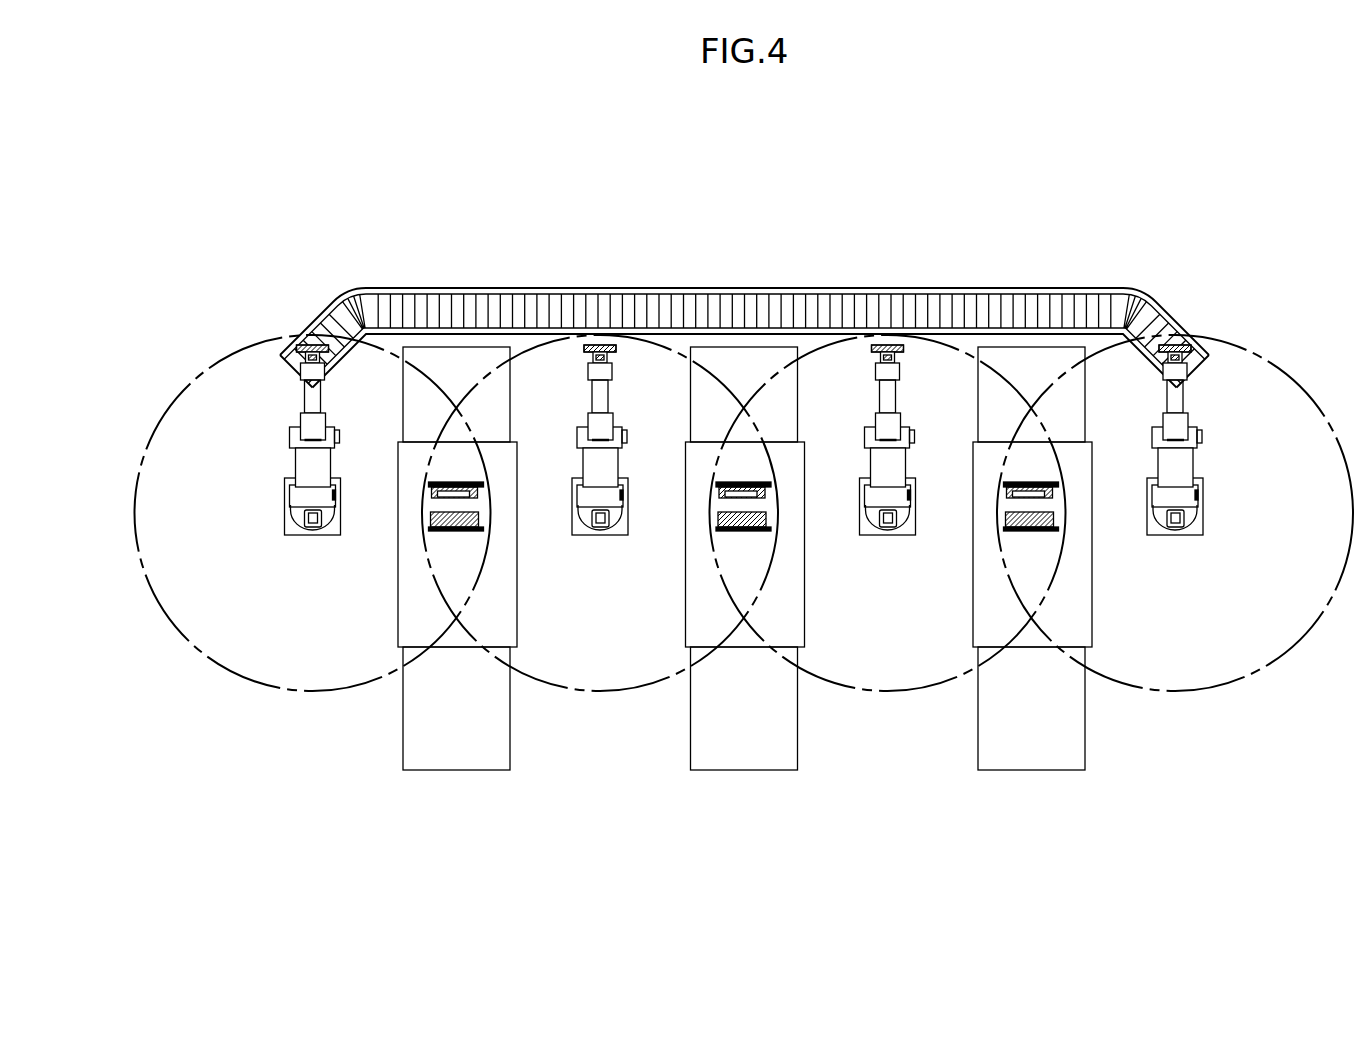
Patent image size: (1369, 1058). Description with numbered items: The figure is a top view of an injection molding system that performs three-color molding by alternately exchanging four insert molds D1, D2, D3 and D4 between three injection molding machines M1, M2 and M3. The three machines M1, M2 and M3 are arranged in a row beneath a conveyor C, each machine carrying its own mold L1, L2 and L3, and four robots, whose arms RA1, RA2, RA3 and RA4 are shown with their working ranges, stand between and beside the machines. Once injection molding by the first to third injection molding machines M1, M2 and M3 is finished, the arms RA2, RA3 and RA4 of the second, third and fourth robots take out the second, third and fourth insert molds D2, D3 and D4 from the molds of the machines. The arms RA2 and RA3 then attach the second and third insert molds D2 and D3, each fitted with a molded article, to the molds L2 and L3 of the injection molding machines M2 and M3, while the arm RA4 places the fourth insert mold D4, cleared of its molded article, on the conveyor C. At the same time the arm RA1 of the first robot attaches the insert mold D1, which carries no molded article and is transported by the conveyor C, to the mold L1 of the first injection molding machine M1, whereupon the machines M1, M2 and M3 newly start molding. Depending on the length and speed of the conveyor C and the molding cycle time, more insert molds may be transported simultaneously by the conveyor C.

The conveyor C is at (738, 285).
The first insert mold D1 is at (303, 337).
The second insert mold D2 is at (592, 337).
The third insert mold D3 is at (880, 337).
The fourth insert mold D4 is at (1168, 342).
The arm of first robot RA1 is at (300, 538).
The arm of second robot RA2 is at (597, 538).
The arm of third robot RA3 is at (885, 538).
The arm of fourth robot RA4 is at (1162, 540).
The first injection molding machine M1 is at (440, 772).
The second injection molding machine M2 is at (727, 772).
The third injection molding machine M3 is at (1015, 772).
The mold of first injection molding machine L1 is at (455, 532).
The mold of second injection molding machine L2 is at (743, 532).
The mold of third injection molding machine L3 is at (1030, 532).